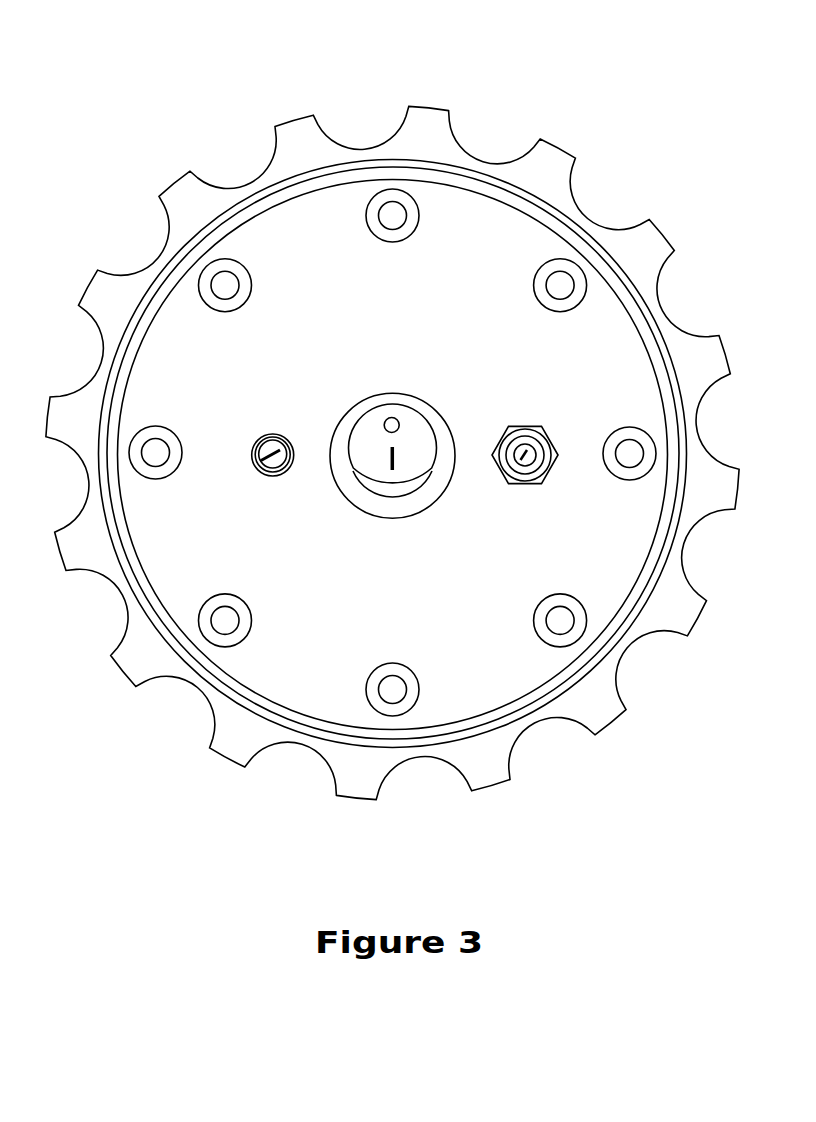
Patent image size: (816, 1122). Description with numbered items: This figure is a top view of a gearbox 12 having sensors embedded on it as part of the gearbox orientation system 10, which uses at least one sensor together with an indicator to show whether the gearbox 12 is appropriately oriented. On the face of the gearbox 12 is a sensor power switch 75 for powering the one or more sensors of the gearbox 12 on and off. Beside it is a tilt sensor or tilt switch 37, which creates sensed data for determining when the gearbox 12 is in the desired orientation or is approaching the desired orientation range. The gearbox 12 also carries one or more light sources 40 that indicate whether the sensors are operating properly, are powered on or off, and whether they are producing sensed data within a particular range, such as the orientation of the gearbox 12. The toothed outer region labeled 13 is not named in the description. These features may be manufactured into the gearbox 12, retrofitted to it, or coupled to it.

The gearbox orientation system 10 is at (392, 400).
The gearbox 12 is at (393, 454).
The sprocket teeth 13 is at (392, 452).
The tilt sensor or tilt switch 37 is at (273, 436).
The light sources 40 is at (510, 477).
The sensor power switch 75 is at (362, 488).